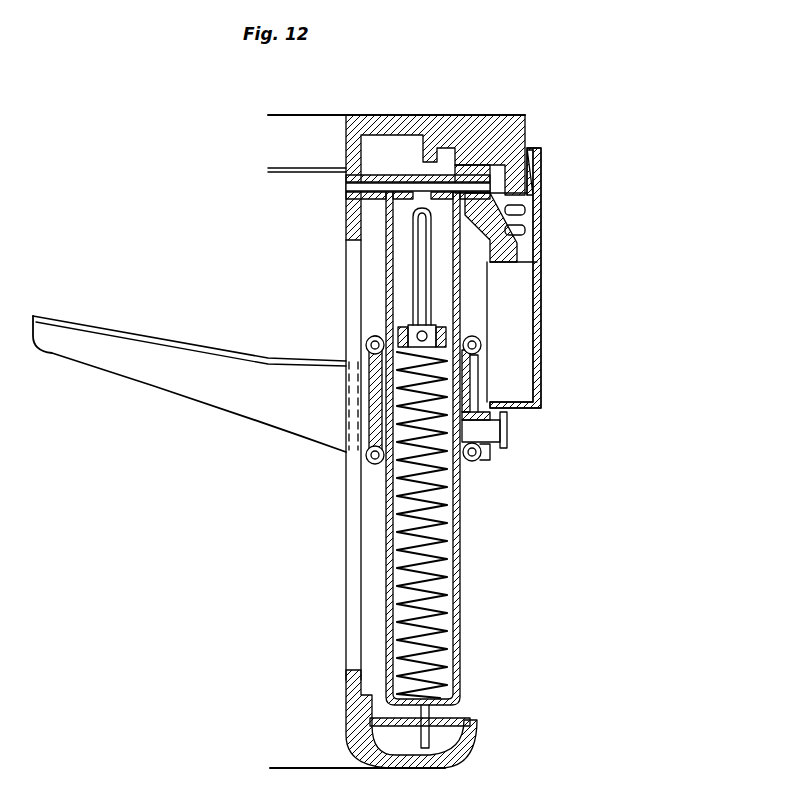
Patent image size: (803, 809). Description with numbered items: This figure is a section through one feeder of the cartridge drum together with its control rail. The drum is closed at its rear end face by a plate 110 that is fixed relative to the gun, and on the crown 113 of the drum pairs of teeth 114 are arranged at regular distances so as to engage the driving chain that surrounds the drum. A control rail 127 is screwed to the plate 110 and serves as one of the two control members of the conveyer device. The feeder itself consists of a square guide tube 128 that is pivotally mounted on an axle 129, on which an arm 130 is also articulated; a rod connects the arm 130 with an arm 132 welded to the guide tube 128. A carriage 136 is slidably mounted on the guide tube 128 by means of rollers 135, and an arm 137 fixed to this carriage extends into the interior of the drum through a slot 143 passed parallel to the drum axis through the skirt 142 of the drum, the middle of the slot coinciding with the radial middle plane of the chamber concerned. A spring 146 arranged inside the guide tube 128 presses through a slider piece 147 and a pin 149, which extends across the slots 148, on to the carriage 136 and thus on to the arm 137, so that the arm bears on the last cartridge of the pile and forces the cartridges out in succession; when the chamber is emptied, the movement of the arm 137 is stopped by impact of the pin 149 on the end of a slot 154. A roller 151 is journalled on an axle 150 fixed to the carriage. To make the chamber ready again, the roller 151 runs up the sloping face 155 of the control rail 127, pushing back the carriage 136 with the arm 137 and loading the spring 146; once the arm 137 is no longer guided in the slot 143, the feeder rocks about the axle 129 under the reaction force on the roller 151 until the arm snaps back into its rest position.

The plate 110 is at (400, 117).
The crown 113 is at (497, 204).
The pairs of teeth 114 is at (530, 232).
The control rail 127 is at (541, 182).
The square guide tube 128 is at (460, 612).
The axle 129 is at (347, 186).
The arm 130 is at (427, 198).
The arm 132 is at (432, 738).
The rollers 135 is at (465, 358).
The carriage 136 is at (467, 390).
The arm 137 is at (183, 397).
The skirt 142 is at (347, 697).
The slot 143 is at (352, 545).
The spring 146 is at (450, 545).
The slider piece 147 is at (402, 330).
The slots 148 is at (423, 247).
The pin 149 is at (447, 333).
The axle 150 is at (480, 432).
The roller 151 is at (486, 452).
The slot 154 is at (357, 207).
The sloping face 155 is at (585, 412).